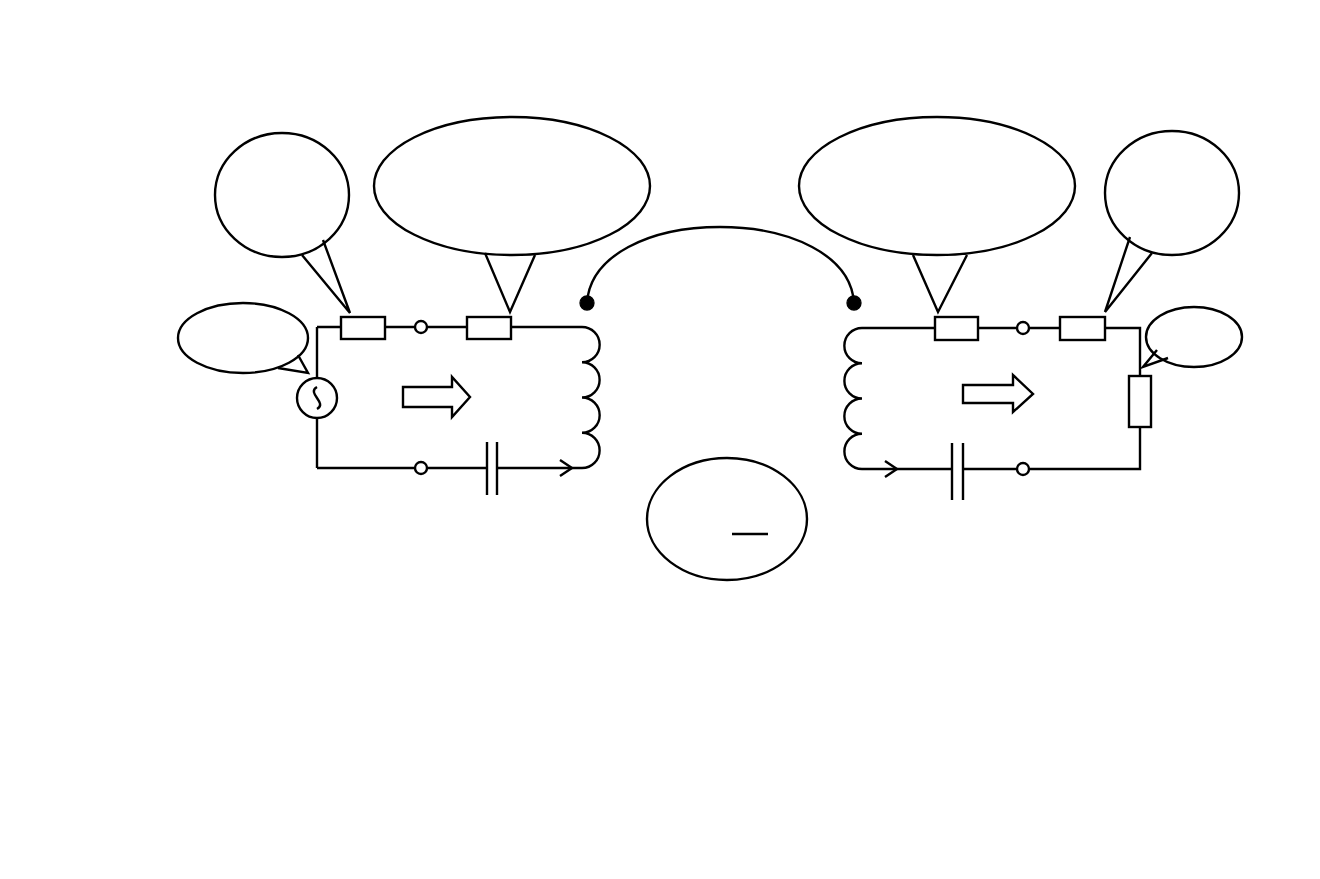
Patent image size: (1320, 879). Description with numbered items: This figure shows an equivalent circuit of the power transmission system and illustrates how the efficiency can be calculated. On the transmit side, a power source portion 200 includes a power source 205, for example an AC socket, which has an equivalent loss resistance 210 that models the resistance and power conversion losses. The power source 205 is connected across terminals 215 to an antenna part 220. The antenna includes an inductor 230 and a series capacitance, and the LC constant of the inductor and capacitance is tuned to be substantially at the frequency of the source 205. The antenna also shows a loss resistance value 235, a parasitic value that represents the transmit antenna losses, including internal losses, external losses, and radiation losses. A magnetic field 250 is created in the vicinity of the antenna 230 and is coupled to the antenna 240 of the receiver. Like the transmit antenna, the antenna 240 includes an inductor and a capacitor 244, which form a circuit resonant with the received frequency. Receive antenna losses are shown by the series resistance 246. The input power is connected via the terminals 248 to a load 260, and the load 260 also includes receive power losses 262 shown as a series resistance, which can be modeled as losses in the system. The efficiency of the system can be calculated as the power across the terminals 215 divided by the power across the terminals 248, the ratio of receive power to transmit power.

The power source portion 200 is at (662, 62).
The power source 205 is at (308, 416).
The equivalent loss resistance 210 is at (348, 340).
The terminals 215 is at (421, 320).
The antenna part 220 is at (487, 495).
The inductor 230 is at (600, 375).
The loss resistance value 235 is at (475, 340).
The receive antenna 240 is at (845, 375).
The capacitor 244 is at (952, 500).
The series resistance 246 is at (942, 340).
The terminals 248 is at (1023, 321).
The magnetic field 250 is at (711, 226).
The load 260 is at (1129, 426).
The receive power losses 262 is at (1068, 340).